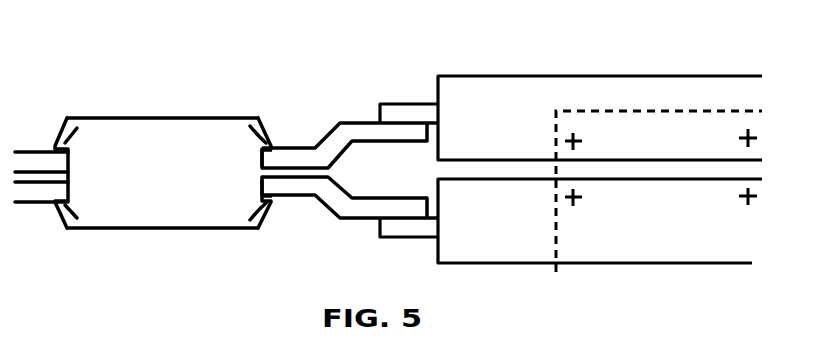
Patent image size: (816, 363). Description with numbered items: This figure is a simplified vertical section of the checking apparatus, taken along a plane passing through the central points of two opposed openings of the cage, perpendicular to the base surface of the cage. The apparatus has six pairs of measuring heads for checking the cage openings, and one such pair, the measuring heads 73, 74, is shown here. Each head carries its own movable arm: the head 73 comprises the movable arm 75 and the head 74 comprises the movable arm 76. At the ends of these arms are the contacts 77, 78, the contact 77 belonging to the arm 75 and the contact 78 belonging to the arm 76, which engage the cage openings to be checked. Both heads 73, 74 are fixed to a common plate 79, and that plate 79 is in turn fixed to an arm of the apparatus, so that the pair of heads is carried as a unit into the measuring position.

The measuring head 73 is at (490, 90).
The measuring head 74 is at (460, 250).
The movable arm 75 is at (317, 153).
The movable arm 76 is at (308, 187).
The contact 77 is at (277, 146).
The contact 78 is at (273, 198).
The plate 79 is at (657, 132).